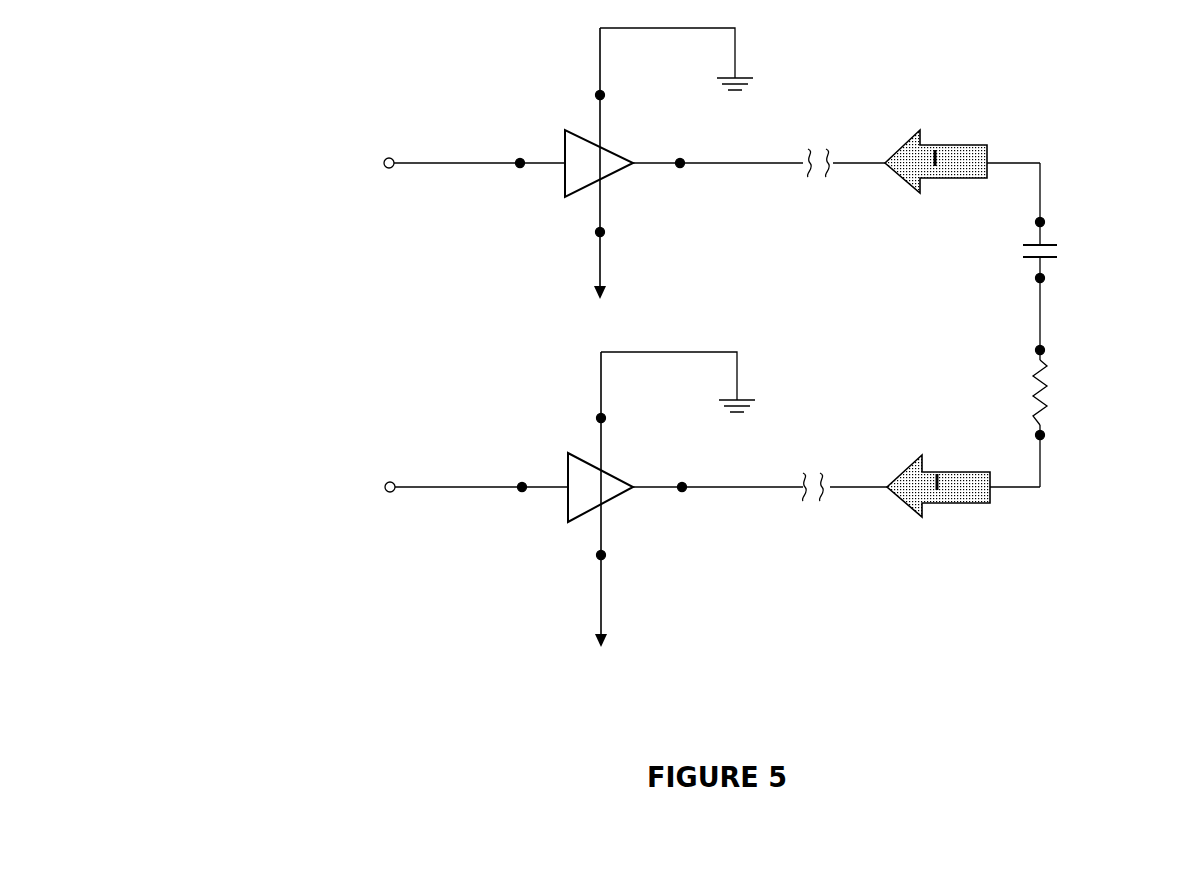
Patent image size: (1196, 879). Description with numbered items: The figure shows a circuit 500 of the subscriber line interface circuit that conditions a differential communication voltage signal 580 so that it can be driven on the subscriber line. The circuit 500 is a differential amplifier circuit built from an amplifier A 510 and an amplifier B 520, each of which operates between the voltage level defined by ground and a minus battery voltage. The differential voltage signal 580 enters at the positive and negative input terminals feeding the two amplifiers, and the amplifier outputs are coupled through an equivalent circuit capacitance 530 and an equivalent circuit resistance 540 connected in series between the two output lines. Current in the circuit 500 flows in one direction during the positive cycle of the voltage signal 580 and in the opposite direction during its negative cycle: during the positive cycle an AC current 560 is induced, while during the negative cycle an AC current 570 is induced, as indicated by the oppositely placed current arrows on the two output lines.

The circuit 500 is at (246, 91).
The amplifier A 510 is at (618, 174).
The amplifier B 520 is at (620, 497).
The equivalent circuit capacitance 530 is at (1048, 244).
The equivalent circuit resistance 540 is at (1046, 383).
The AC current I_AC_1 560 is at (940, 505).
The AC current I_AC_2 570 is at (972, 145).
The differential communication voltage signal 580 is at (390, 169).